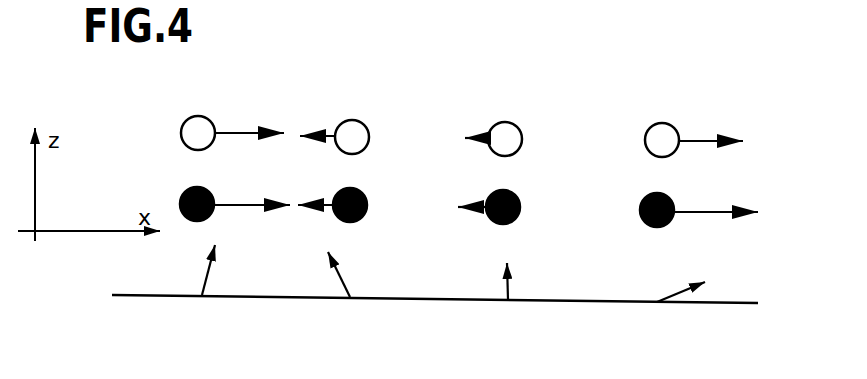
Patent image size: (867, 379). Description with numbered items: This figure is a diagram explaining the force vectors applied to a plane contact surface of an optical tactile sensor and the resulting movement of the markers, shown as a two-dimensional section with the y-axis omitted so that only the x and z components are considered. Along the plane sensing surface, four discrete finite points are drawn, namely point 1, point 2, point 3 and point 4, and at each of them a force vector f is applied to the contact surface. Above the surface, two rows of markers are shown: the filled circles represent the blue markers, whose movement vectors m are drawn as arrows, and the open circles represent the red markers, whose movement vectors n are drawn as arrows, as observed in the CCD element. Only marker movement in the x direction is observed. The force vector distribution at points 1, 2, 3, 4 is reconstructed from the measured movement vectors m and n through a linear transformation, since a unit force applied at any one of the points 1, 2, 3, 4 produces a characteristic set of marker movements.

The point 1 is at (235, 213).
The point 2 is at (348, 216).
The point 3 is at (503, 219).
The point 4 is at (697, 221).